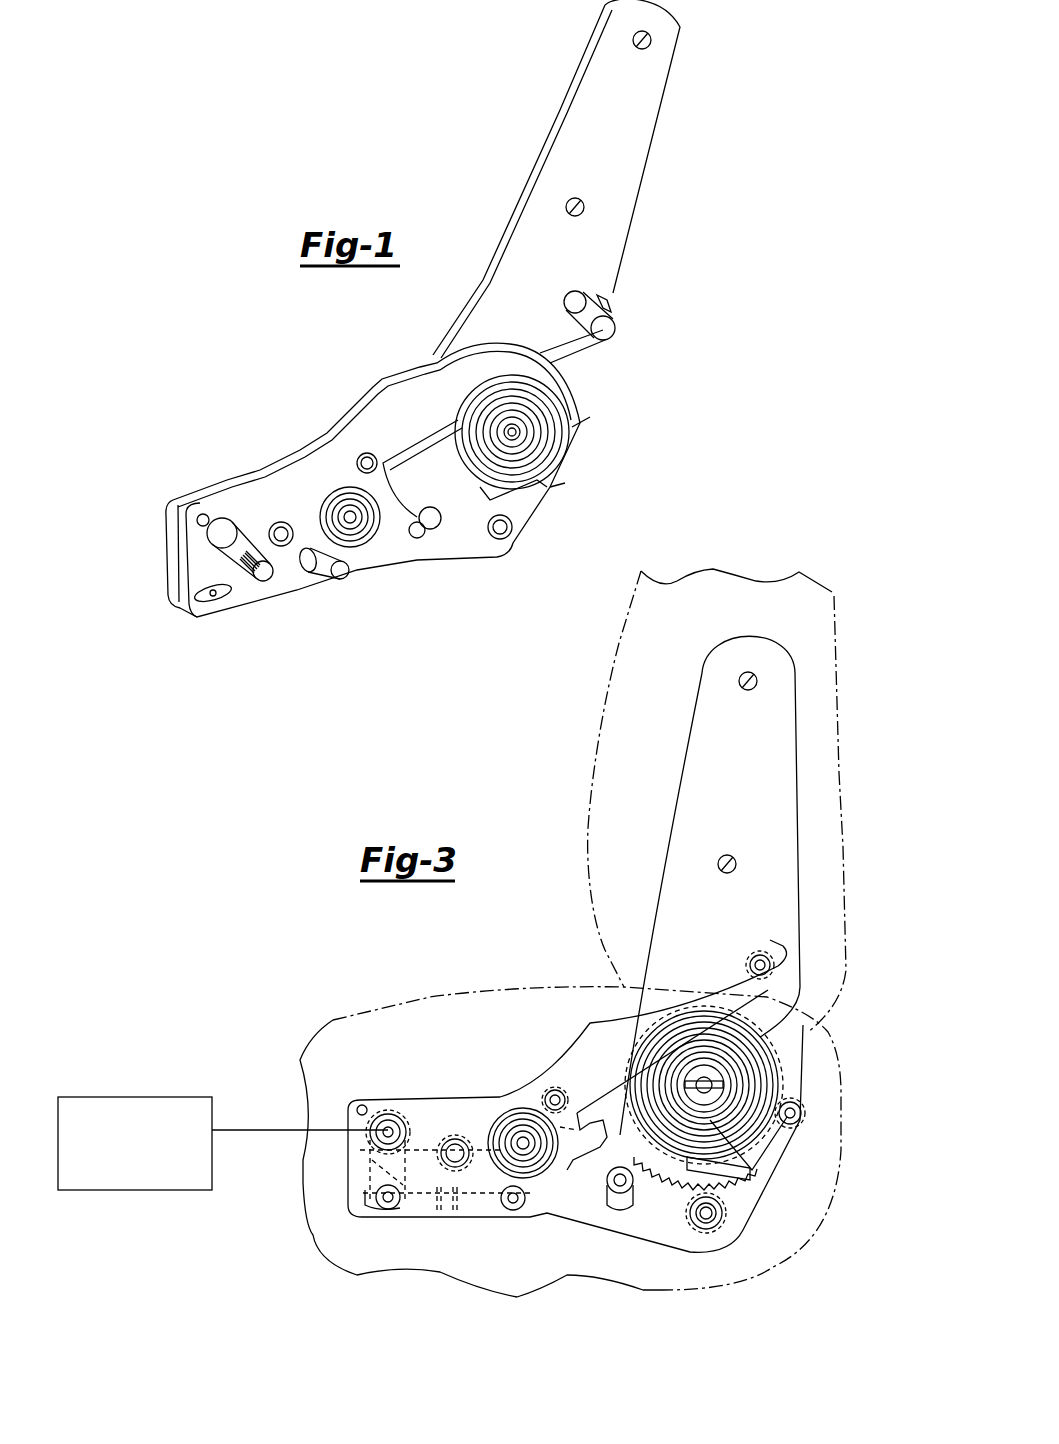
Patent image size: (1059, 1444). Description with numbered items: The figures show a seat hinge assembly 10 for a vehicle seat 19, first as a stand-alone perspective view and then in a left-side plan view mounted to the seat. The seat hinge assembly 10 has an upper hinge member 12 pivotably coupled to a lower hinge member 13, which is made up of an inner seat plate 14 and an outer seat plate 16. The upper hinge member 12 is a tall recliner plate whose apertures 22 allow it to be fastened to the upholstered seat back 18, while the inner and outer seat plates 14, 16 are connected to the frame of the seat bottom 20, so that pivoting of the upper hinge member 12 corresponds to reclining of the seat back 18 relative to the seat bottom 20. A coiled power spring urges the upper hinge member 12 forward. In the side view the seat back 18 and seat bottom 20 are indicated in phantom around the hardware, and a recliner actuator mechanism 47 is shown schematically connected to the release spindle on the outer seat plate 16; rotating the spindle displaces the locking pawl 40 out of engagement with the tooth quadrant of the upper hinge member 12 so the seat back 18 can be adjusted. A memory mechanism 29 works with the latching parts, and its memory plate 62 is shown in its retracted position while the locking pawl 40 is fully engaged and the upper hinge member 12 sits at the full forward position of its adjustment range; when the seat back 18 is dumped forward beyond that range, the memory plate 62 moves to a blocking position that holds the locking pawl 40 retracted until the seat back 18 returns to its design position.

In FIG. 1, the seat hinge assembly 10 is at (478, 217).
In FIG. 1, the upper hinge member 12 is at (548, 132).
In FIG. 3, the upper hinge member 12 is at (772, 903).
In FIG. 1, the lower hinge member 13 is at (296, 443).
In FIG. 3, the lower hinge member 13 is at (498, 1098).
In FIG. 1, the inner seat plate 14 is at (232, 497).
In FIG. 1, the outer seat plate 16 is at (230, 503).
In FIG. 3, the outer seat plate 16 is at (437, 1120).
In FIG. 3, the seat back 18 is at (843, 760).
In FIG. 3, the vehicle seat 19 is at (561, 957).
In FIG. 3, the seat bottom 20 is at (433, 995).
In FIG. 3, the apertures 22 is at (748, 682).
In FIG. 1, the memory mechanism 29 is at (456, 508).
In FIG. 3, the locking pawl 40 is at (653, 1213).
In FIG. 3, the recliner actuator mechanism 47 is at (177, 1097).
In FIG. 3, the memory plate 62 is at (608, 1107).